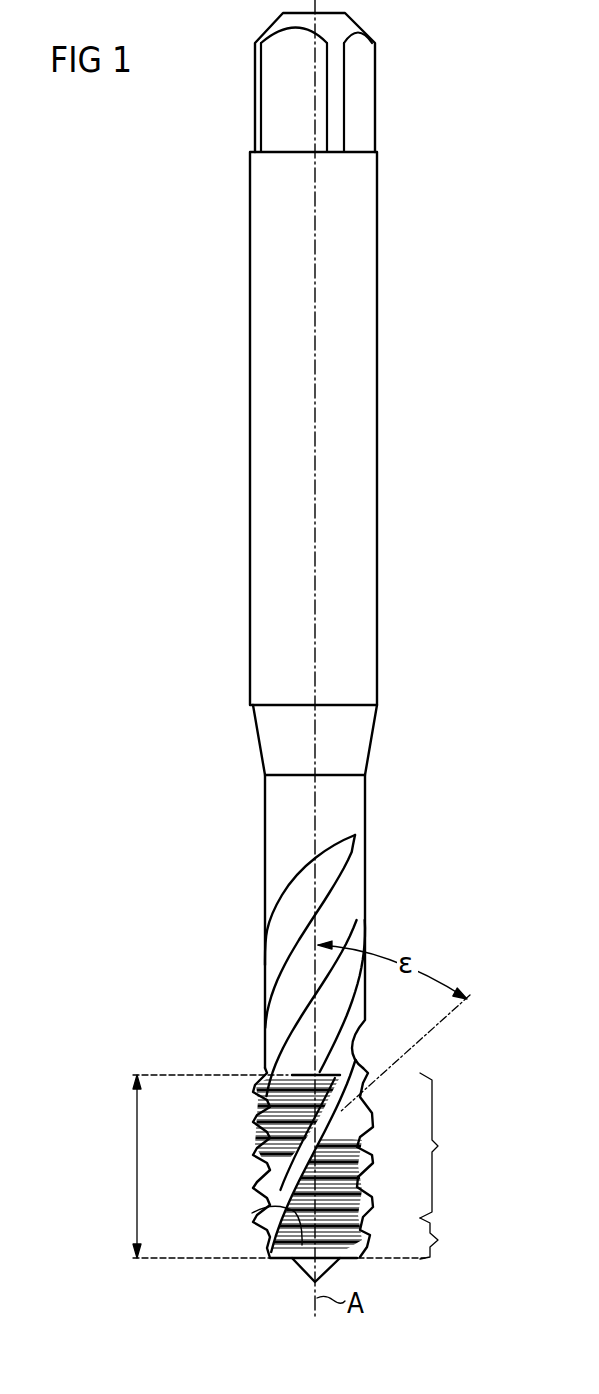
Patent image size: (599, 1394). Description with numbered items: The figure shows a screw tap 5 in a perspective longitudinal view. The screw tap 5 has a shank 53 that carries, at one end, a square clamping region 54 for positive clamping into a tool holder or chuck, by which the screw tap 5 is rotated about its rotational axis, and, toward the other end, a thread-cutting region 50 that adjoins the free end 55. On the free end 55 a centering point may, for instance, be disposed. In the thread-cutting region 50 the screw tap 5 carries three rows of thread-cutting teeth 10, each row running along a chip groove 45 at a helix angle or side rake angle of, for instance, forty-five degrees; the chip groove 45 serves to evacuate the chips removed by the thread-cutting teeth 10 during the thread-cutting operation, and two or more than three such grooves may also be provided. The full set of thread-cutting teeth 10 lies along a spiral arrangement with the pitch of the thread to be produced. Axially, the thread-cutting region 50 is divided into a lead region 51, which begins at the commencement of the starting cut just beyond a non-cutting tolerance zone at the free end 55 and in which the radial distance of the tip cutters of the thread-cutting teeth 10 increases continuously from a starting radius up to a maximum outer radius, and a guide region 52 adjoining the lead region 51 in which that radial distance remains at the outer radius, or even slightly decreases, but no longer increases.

The screw tap 5 is at (377, 355).
The shank 53 is at (340, 488).
The square clamping region 54 is at (357, 96).
The chip groove 45 is at (340, 1110).
The thread-cutting region 50 is at (275, 1166).
The guide region 52 is at (445, 1145).
The lead region 51 is at (445, 1238).
The thread-cutting teeth 10 is at (298, 1182).
The free end 55 is at (313, 1283).